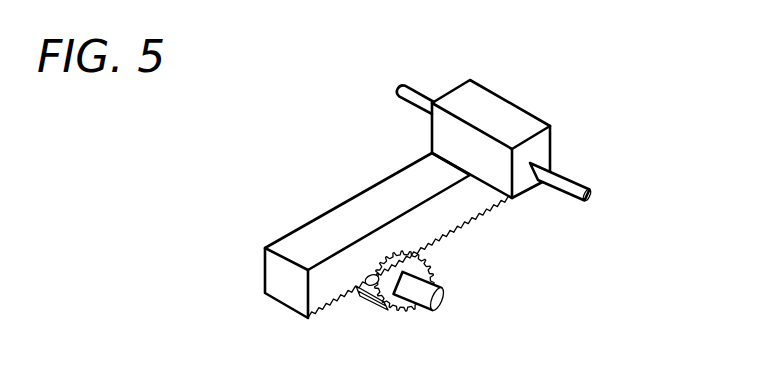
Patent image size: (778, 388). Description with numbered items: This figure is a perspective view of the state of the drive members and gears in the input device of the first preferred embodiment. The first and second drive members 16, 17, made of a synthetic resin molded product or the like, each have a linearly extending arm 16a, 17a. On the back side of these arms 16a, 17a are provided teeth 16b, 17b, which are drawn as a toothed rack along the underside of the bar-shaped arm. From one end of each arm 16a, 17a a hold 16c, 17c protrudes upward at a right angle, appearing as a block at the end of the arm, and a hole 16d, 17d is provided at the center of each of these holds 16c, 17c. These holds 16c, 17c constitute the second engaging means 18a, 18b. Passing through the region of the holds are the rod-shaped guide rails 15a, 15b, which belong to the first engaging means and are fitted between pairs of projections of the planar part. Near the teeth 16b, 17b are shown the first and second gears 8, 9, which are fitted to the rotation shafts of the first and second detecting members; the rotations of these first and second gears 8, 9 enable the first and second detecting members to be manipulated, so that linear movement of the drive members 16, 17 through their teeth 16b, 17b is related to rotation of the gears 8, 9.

The first drive member 16 is at (339, 231).
The second drive member 17 is at (339, 231).
The arm 16a is at (318, 211).
The arm 17a is at (290, 238).
The teeth 16b is at (362, 279).
The teeth 17b is at (330, 307).
The hold 16c is at (491, 88).
The hold 17c is at (480, 100).
The hole 16d is at (605, 154).
The hole 17d is at (552, 132).
The second engaging means 18a is at (565, 112).
The second engaging means 18b is at (565, 112).
The guide rail 15a is at (615, 182).
The guide rail 15b is at (592, 189).
The first gear 8 is at (400, 313).
The second gear 9 is at (384, 308).